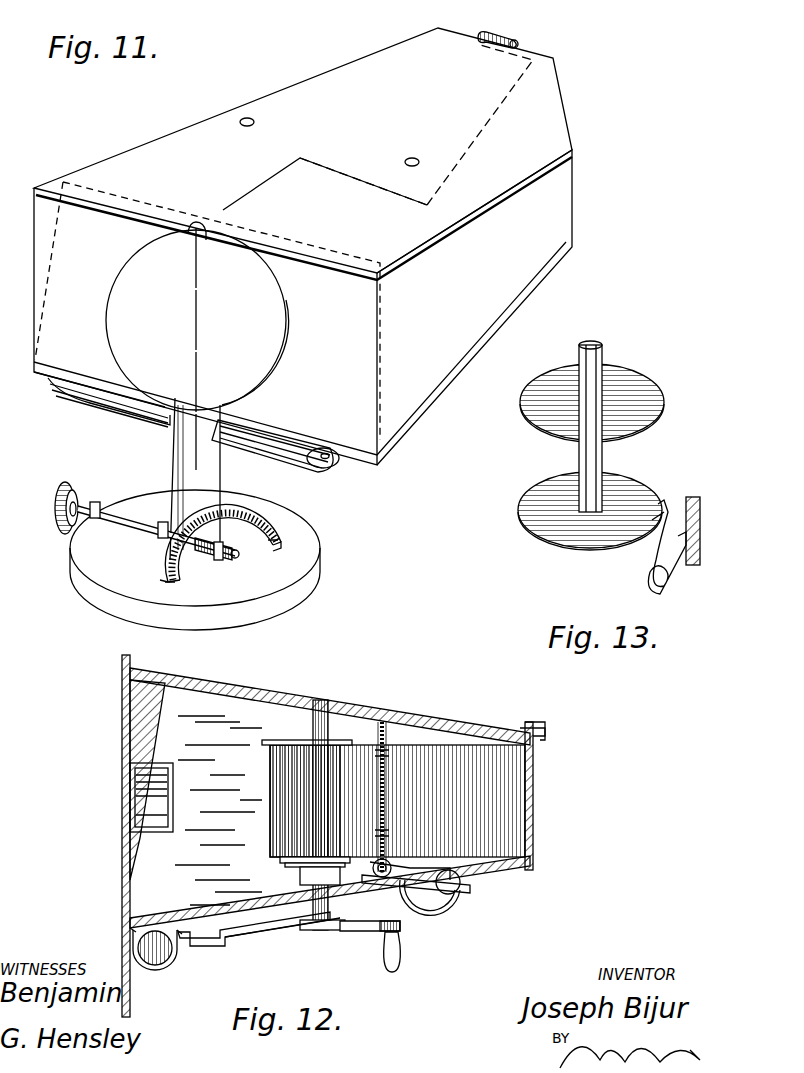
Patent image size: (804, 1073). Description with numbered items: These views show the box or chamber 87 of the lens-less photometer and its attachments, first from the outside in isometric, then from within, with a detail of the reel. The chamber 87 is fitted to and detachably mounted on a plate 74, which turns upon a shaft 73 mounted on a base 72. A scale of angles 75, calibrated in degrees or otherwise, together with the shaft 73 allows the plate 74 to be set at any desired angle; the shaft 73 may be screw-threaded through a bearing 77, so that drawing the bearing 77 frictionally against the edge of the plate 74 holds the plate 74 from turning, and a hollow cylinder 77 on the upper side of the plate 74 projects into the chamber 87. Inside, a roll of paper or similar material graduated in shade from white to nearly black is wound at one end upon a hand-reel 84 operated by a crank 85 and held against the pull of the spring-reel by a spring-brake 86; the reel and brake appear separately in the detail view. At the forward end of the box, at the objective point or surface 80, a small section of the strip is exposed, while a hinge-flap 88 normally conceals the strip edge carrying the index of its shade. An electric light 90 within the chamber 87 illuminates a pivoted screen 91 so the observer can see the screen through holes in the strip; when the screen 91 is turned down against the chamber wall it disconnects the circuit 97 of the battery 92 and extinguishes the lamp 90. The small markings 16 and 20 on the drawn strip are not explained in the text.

In FIG. 11, the base 72 is at (510, 32).
In FIG. 11, the shaft 73 is at (152, 536).
In FIG. 11, the plate 74 is at (197, 391).
In FIG. 11, the scale of angles 75 is at (295, 500).
In FIG. 11, the bearing 77 is at (195, 560).
In FIG. 12, the bearing 77 is at (151, 797).
In FIG. 11, the box or chamber 87 is at (303, 250).
In FIG. 13, the hand-reel 84 is at (595, 445).
In FIG. 12, the hand-reel 84 is at (268, 742).
In FIG. 13, the spring-brake 86 is at (655, 548).
In FIG. 12, the objective point or surface 80 is at (541, 799).
In FIG. 12, the hinge-flap 88 is at (552, 744).
In FIG. 12, the pivoted screen 91 is at (386, 738).
In FIG. 12, the electric light 90 is at (468, 890).
In FIG. 12, the crank 85 is at (408, 948).
In FIG. 12, the circuit 97 is at (259, 938).
In FIG. 12, the battery 92 is at (166, 957).
In FIG. 12, the rack 16 is at (415, 756).
In FIG. 12, the rack 20 is at (494, 756).